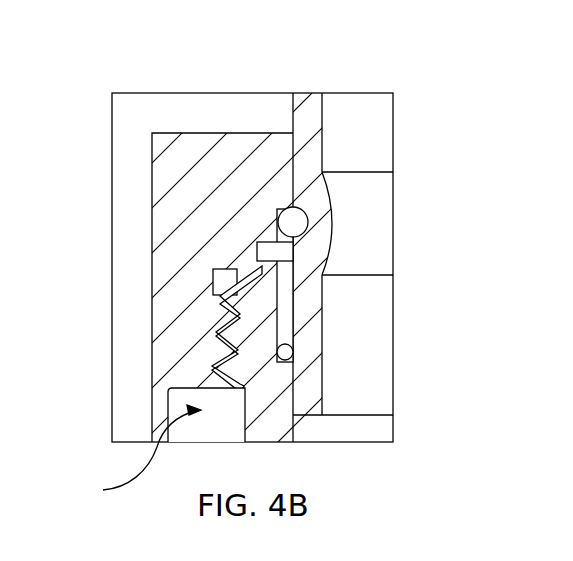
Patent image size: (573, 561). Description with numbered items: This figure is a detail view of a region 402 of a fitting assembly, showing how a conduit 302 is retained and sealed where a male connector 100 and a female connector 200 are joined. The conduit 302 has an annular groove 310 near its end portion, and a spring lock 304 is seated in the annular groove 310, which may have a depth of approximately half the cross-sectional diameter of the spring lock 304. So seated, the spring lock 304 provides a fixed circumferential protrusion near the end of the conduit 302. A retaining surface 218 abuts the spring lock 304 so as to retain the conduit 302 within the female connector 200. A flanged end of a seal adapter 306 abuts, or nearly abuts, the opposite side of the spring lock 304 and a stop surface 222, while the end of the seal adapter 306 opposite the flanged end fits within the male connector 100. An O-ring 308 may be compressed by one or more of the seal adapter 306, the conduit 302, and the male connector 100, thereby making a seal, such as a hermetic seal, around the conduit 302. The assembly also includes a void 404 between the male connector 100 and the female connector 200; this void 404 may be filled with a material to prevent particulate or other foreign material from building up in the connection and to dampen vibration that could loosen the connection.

The male connector 100 is at (205, 431).
The female connector 200 is at (286, 267).
The retaining surface 218 is at (251, 190).
The stop surface 222 is at (234, 269).
The conduit 302 is at (268, 245).
The spring lock 304 is at (355, 223).
The seal adapter 306 is at (273, 329).
The O-ring 308 is at (343, 401).
The annular groove 310 is at (357, 288).
The region 402 is at (228, 236).
The void 404 is at (130, 456).